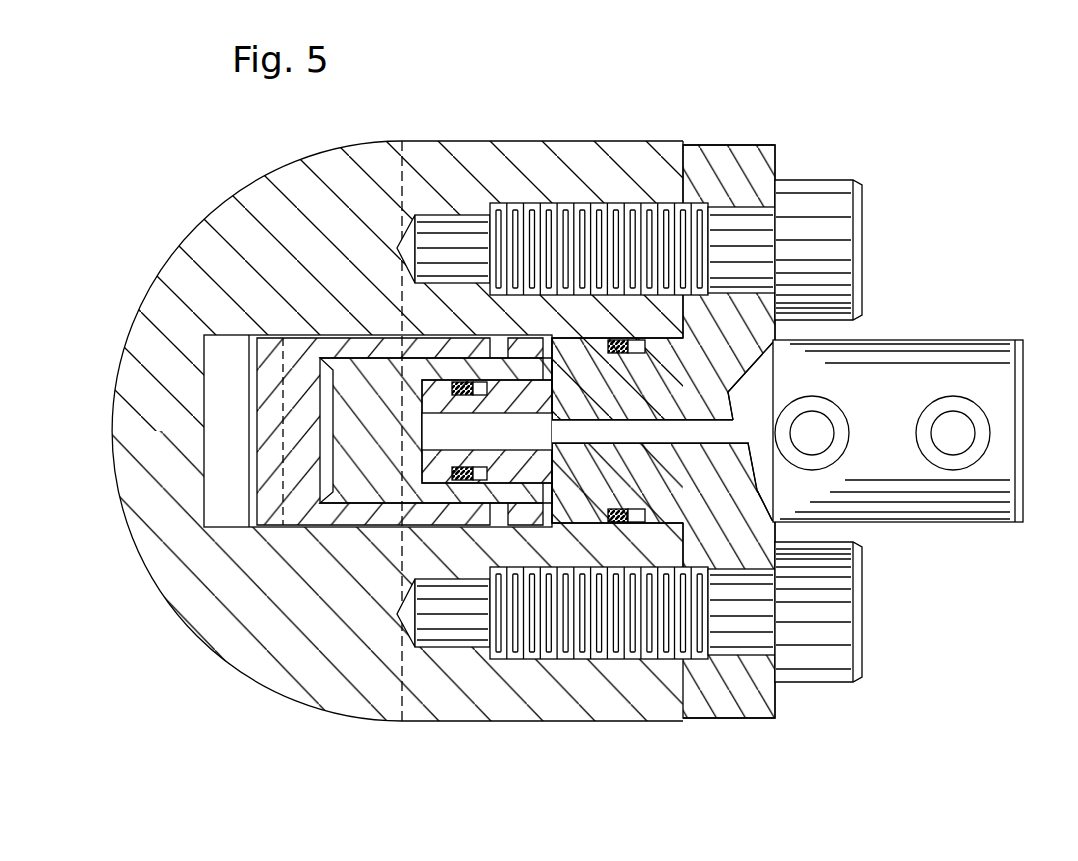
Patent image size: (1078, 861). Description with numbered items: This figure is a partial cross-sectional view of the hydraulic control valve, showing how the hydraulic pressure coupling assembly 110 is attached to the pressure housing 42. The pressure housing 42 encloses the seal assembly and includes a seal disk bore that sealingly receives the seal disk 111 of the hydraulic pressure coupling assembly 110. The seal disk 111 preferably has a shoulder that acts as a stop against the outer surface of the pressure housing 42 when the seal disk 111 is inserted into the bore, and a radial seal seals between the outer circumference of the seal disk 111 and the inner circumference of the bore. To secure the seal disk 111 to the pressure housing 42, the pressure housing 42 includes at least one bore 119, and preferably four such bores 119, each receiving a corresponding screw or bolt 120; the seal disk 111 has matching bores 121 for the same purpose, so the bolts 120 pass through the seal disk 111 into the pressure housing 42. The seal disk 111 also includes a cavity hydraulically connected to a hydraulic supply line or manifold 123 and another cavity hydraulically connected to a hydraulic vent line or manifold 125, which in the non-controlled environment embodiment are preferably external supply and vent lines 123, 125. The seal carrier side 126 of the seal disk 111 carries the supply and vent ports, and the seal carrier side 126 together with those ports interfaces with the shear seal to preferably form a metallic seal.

The pressure housing 42 is at (567, 733).
The hydraulic pressure coupling assembly 110 is at (578, 456).
The seal disk 111 is at (767, 408).
The bore 119 is at (573, 205).
The bolt 120 is at (827, 182).
The matching bore 121 is at (743, 212).
The hydraulic supply line or manifold 123 is at (914, 377).
The hydraulic vent line or manifold 125 is at (953, 398).
The seal carrier side 126 is at (561, 363).